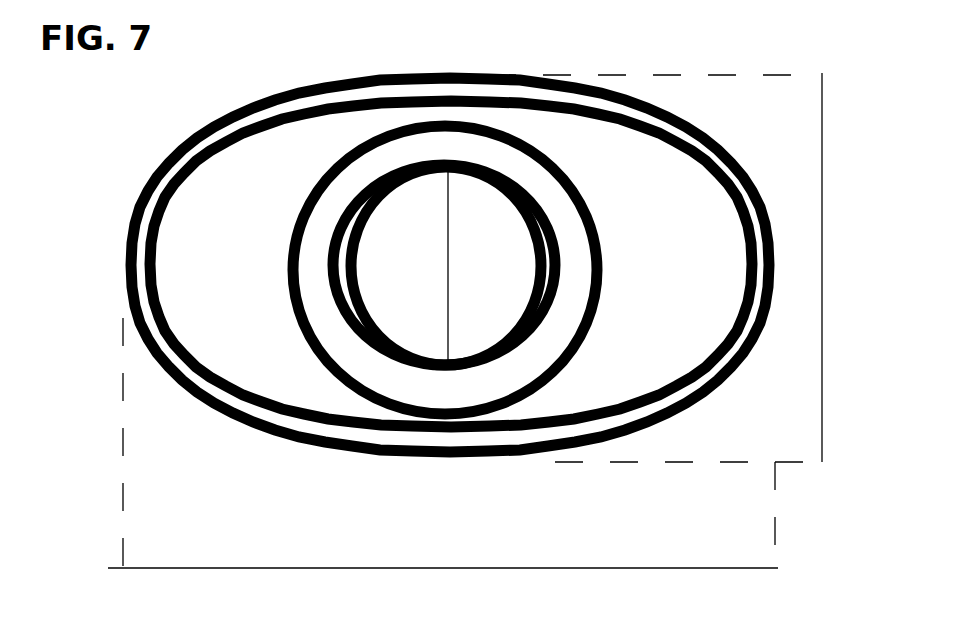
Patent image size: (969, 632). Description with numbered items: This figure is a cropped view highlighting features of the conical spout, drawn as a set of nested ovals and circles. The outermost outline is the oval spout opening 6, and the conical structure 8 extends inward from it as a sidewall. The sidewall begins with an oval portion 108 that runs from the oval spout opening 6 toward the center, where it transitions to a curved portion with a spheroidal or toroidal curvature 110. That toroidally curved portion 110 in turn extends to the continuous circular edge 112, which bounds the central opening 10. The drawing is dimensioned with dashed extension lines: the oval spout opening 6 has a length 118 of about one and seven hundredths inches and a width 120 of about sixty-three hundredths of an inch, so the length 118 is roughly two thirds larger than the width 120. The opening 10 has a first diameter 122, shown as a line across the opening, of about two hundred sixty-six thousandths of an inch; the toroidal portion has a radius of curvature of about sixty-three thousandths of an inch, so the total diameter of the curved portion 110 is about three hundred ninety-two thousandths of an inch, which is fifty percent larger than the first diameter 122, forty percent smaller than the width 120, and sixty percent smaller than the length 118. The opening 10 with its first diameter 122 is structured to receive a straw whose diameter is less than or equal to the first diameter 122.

The oval spout opening 6 is at (126, 258).
The conical structure 8 is at (90, 136).
The opening 10 is at (528, 273).
The oval portion 108 is at (240, 223).
The curved portion with spheroidal or toroidal curvature 110 is at (402, 142).
The continuous circular edge 112 is at (453, 160).
The length 118 is at (563, 568).
The width 120 is at (822, 243).
The first diameter 122 is at (447, 240).